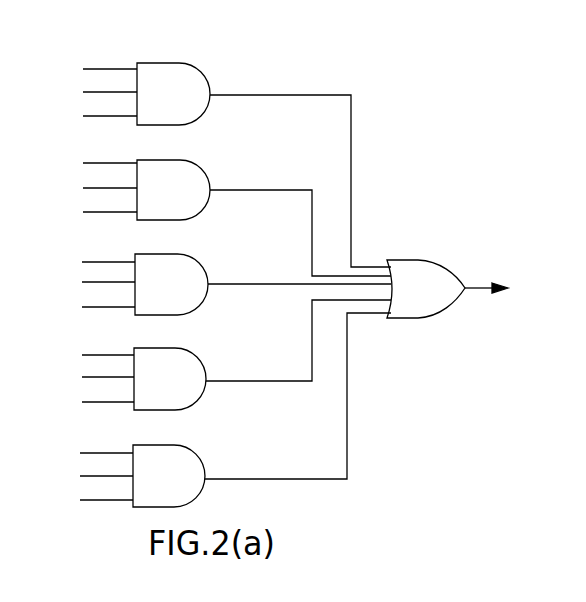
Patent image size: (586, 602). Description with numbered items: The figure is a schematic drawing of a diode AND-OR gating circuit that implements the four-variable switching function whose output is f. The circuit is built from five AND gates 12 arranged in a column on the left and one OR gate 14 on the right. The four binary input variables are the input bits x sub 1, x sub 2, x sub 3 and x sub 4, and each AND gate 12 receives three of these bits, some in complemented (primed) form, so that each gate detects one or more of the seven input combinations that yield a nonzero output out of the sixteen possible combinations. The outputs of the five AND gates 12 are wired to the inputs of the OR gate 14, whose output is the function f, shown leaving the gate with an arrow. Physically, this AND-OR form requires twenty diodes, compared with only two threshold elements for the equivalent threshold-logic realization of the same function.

The AND gate 12 is at (178, 78).
The OR gate 14 is at (428, 277).
The input variable X1 1 is at (72, 52).
The input variable X2 2 is at (93, 280).
The input variable X3 3 is at (93, 282).
The input variable X4 4 is at (64, 489).